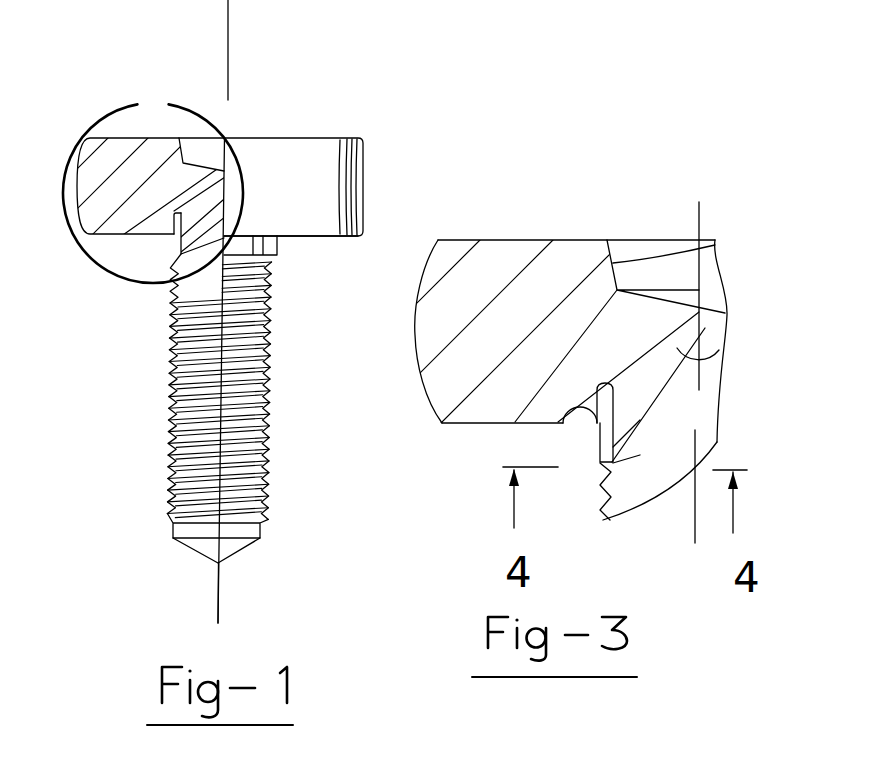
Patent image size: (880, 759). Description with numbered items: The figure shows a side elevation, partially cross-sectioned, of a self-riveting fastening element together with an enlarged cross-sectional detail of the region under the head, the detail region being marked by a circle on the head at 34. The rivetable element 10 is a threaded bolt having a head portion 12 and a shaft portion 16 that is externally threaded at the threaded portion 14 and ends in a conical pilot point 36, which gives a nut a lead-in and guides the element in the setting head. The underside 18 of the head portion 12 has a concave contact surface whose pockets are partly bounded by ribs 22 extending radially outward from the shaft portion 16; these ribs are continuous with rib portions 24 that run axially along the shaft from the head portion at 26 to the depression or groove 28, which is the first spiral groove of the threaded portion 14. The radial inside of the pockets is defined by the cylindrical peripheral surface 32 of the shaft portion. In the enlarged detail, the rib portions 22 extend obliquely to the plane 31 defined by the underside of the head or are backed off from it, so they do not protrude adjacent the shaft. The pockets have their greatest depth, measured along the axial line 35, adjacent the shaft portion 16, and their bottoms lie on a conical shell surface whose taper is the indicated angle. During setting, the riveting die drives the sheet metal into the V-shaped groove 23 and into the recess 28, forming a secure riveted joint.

In FIG. 1, the rivetable element 10 is at (238, 320).
In FIG. 1, the head portion 12 is at (366, 232).
In FIG. 1, the threaded portion 14 is at (272, 408).
In FIG. 1, the shaft portion 16 is at (262, 540).
In FIG. 1, the underside of the head portion 18 is at (317, 240).
In FIG. 3, the underside of the head portion 18 is at (748, 758).
In FIG. 1, the ribs 22 is at (151, 236).
In FIG. 3, the ribs 22 is at (567, 418).
In FIG. 1, the V-shaped groove 23 is at (170, 218).
In FIG. 3, the V-shaped groove 23 is at (561, 428).
In FIG. 3, the rib portions 24 is at (620, 413).
In FIG. 3, the head portion end of ribs 26 is at (600, 465).
In FIG. 3, the depression or groove 28 is at (613, 473).
In FIG. 3, the plane 31 is at (460, 421).
In FIG. 1, the cylindrical peripheral surface 32 is at (246, 248).
In FIG. 1, the top groove 34 is at (184, 164).
In FIG. 3, the top groove 34 is at (715, 246).
In FIG. 1, the axial line 35 is at (217, 585).
In FIG. 1, the conical pilot point 36 is at (242, 553).